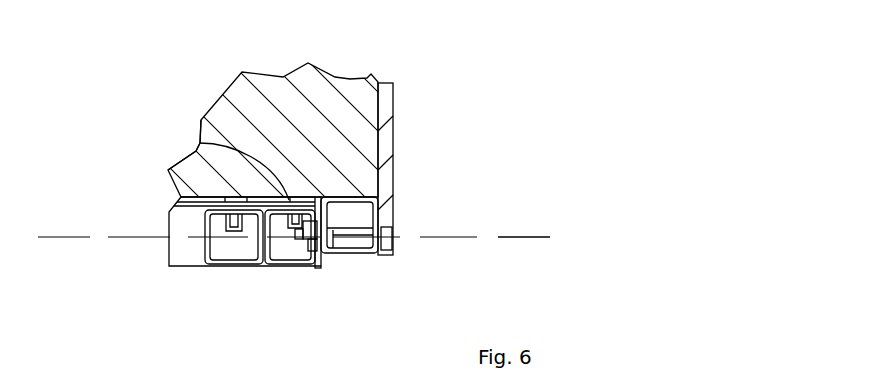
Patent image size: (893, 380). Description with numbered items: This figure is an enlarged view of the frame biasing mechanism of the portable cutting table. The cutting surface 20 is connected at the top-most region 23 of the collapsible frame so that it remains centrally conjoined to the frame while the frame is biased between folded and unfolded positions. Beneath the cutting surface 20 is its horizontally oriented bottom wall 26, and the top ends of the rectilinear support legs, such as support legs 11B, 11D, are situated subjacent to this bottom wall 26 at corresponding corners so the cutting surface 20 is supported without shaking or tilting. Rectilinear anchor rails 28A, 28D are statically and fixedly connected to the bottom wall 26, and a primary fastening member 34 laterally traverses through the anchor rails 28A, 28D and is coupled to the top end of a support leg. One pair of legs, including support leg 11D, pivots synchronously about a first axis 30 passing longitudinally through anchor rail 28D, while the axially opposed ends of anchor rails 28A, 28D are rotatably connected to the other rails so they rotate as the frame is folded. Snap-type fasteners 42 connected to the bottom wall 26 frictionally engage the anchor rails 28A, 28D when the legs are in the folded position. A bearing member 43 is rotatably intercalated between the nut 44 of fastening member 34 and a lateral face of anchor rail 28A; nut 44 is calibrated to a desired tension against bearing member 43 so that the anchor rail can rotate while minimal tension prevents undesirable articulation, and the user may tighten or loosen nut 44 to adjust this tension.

The cutting surface 20 is at (241, 98).
The top-most region 23 is at (386, 143).
The bottom wall 26 is at (178, 190).
The snap-type fastener 42 is at (200, 143).
The nut 44 is at (307, 222).
The bearing member 43 is at (322, 258).
The primary fastening member 34 is at (392, 228).
The first axis 30 is at (522, 237).
The anchor rail 28A is at (350, 253).
The anchor rail 28D is at (200, 206).
The support leg 11B is at (225, 263).
The support leg 11D is at (277, 263).